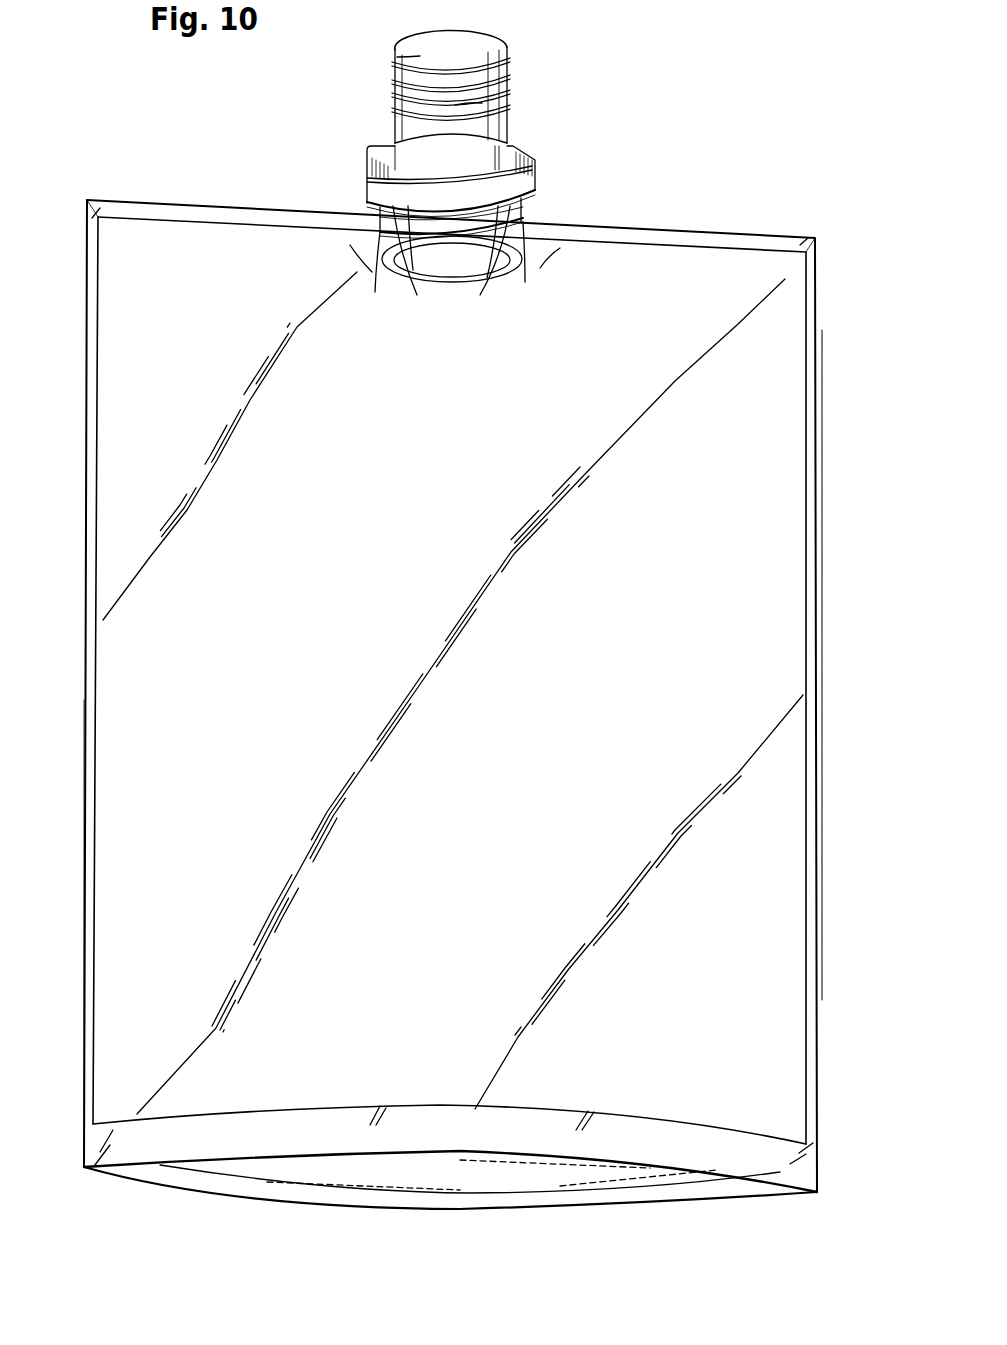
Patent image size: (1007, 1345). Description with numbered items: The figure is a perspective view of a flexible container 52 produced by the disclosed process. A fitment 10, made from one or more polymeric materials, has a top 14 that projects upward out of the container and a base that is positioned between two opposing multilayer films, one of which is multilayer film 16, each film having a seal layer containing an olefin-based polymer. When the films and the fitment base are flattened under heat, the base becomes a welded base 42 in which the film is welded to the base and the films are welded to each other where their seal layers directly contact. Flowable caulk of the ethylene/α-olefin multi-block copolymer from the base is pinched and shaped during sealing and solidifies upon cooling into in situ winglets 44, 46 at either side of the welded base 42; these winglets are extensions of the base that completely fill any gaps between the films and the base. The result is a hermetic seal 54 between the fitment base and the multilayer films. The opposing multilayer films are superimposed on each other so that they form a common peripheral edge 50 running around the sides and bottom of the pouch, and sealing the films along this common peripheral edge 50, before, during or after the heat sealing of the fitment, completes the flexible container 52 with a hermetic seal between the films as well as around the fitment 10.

The fitment 10 is at (571, 82).
The top 14 is at (417, 45).
The multilayer film 16 is at (177, 648).
The welded base 42 is at (324, 186).
The in situ winglet 44 is at (378, 246).
The in situ winglet 46 is at (537, 245).
The common peripheral edge 50 is at (675, 222).
The flexible container 52 is at (757, 176).
The hermetic seal 54 is at (512, 218).